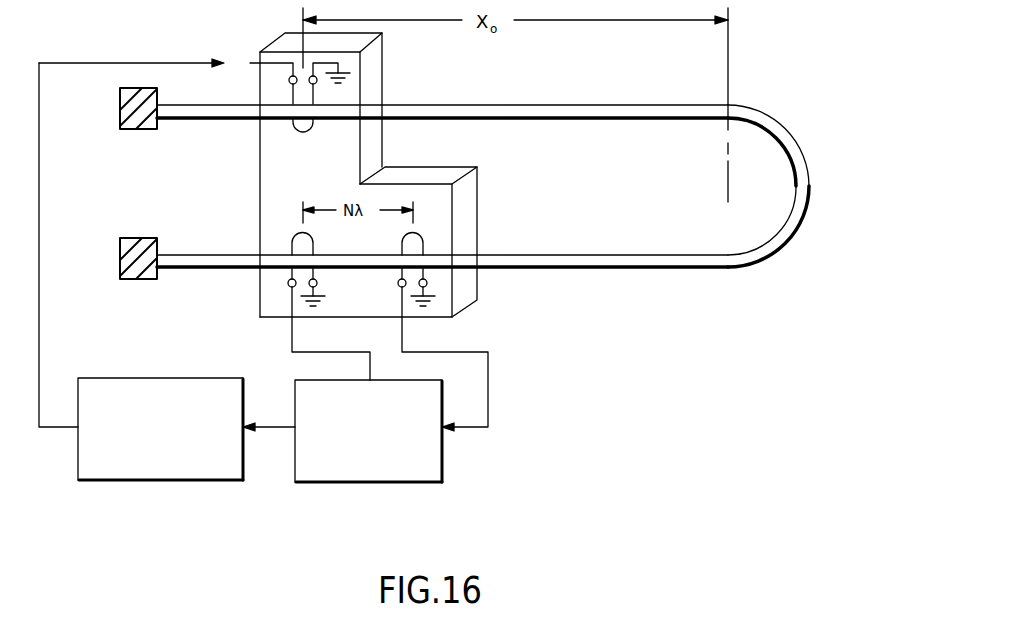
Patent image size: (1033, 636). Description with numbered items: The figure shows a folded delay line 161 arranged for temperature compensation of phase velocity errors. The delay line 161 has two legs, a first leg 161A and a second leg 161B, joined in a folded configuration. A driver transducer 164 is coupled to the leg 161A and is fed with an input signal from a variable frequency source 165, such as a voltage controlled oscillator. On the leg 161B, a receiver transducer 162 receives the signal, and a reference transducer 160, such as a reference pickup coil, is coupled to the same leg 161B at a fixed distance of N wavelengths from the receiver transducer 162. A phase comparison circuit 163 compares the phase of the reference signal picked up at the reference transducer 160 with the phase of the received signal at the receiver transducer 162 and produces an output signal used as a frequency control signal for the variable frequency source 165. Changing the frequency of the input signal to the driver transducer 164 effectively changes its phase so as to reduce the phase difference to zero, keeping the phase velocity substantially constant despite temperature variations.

The reference transducer 160 is at (426, 245).
The folded delay line 161 is at (464, 183).
The leg of the folded delay line 161A is at (536, 104).
The leg of the folded delay line 161B is at (557, 268).
The receiver transducer 162 is at (315, 241).
The phase comparison circuit 163 is at (350, 485).
The driver transducer 164 is at (313, 122).
The variable frequency source 165 is at (178, 483).